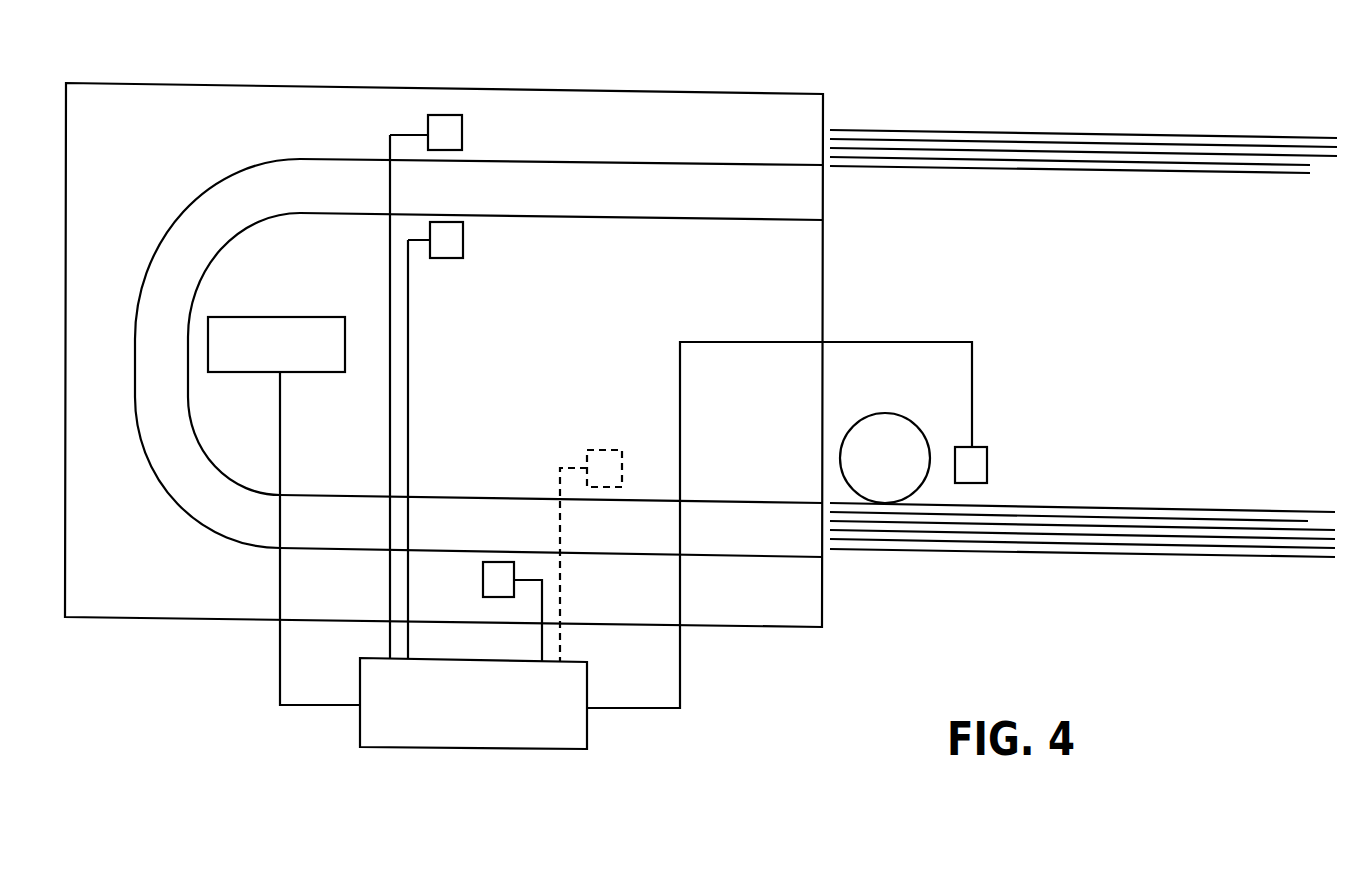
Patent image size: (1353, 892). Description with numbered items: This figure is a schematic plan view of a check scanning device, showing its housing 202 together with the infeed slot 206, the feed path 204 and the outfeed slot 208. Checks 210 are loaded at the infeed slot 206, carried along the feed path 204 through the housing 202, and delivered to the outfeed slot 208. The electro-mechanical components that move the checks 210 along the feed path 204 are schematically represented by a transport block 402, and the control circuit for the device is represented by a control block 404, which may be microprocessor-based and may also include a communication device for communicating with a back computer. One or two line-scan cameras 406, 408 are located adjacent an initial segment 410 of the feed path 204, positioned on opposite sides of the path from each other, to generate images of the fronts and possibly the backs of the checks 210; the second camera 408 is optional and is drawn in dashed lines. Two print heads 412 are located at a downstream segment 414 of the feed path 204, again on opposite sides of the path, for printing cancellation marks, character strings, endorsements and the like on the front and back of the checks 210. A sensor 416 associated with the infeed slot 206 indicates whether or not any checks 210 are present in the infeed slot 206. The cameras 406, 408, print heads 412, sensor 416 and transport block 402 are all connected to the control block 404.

The housing 202 is at (570, 88).
The feed path 204 is at (212, 523).
The infeed slot 206 is at (782, 557).
The outfeed slot 208 is at (782, 163).
The checks 210 is at (1108, 195).
The transport block 402 is at (263, 317).
The control circuit 404 is at (527, 750).
The line-scan camera 406 is at (483, 572).
The line-scan camera 408 is at (605, 450).
The initial segment 410 is at (707, 502).
The print heads 412 is at (462, 135).
The downstream segment 414 is at (683, 220).
The sensor 416 is at (987, 470).